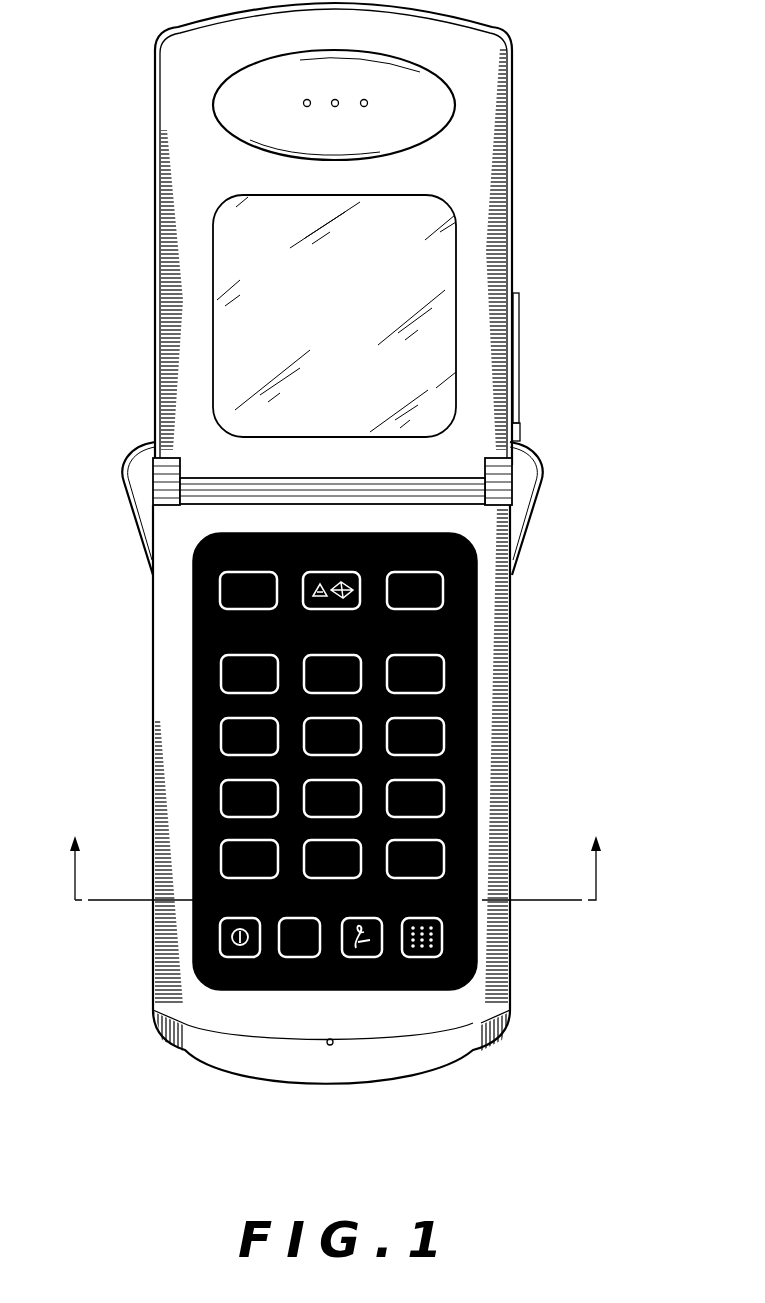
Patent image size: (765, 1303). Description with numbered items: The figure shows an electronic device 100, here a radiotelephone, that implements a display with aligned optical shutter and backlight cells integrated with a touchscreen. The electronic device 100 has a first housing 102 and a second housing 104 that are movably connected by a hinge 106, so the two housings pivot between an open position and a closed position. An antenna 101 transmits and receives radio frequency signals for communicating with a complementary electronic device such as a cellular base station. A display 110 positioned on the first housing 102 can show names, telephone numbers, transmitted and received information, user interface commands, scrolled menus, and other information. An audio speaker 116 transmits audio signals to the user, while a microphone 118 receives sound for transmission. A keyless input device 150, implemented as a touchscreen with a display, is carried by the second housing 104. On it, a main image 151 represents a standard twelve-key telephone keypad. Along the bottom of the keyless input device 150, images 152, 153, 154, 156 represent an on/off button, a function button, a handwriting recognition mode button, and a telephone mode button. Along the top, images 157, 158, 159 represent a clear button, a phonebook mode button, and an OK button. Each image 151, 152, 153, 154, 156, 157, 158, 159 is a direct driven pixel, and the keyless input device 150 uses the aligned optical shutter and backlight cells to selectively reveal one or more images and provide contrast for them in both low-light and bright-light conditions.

The electronic device 100 is at (571, 1158).
The antenna 101 is at (519, 354).
The first housing 102 is at (170, 299).
The second housing 104 is at (179, 722).
The hinge 106 is at (150, 470).
The display 110 is at (413, 216).
The audio speaker 116 is at (246, 100).
The microphone 118 is at (330, 1046).
The keyless input device 150 is at (465, 622).
The main image 151 is at (463, 802).
The on/off button image 152 is at (247, 980).
The function button image 153 is at (307, 980).
The handwriting recognition mode button image 154 is at (369, 980).
The telephone mode button image 156 is at (429, 980).
The clear button image 157 is at (200, 598).
The phonebook mode button image 158 is at (346, 545).
The OK button image 159 is at (463, 585).